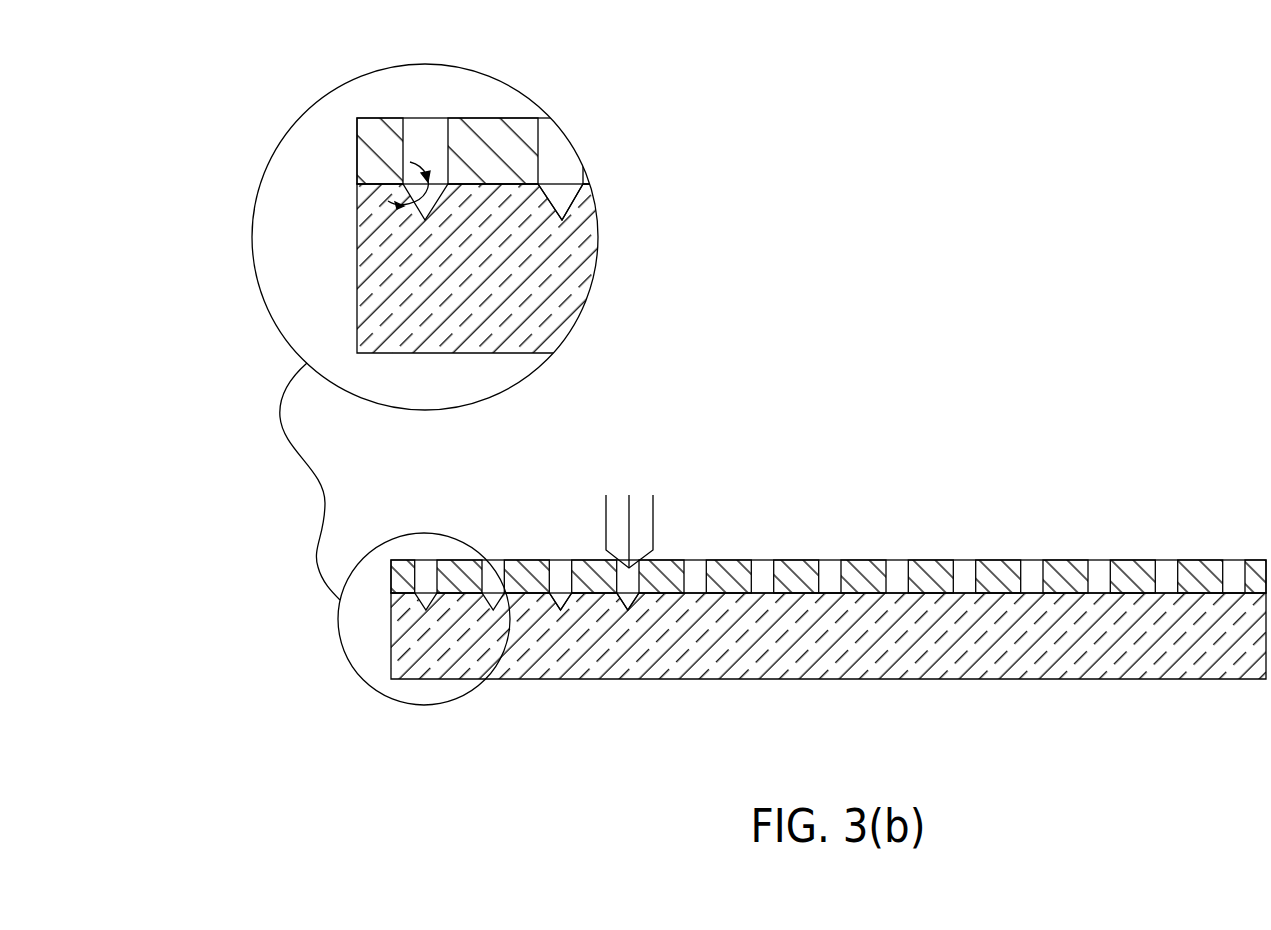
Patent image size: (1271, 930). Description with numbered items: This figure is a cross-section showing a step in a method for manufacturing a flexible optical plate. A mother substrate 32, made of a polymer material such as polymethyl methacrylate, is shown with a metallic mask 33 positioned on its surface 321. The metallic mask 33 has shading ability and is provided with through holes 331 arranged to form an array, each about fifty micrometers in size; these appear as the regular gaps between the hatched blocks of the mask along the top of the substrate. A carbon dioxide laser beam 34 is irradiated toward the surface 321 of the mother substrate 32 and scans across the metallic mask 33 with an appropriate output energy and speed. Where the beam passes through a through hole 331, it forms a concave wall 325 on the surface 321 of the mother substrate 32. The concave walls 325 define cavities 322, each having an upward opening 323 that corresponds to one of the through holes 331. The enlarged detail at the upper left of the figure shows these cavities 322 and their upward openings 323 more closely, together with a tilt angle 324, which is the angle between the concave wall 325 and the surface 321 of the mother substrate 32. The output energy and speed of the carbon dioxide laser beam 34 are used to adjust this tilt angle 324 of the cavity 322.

The mother substrate 32 is at (372, 294).
The metallic mask 33 is at (380, 136).
The surface 321 is at (1232, 592).
The cavity 322 is at (628, 598).
The upward opening 323 is at (552, 182).
The tilt angle 324 is at (418, 198).
The concave wall 325 is at (564, 597).
The through hole 331 is at (832, 573).
The carbon dioxide laser beam 34 is at (640, 517).